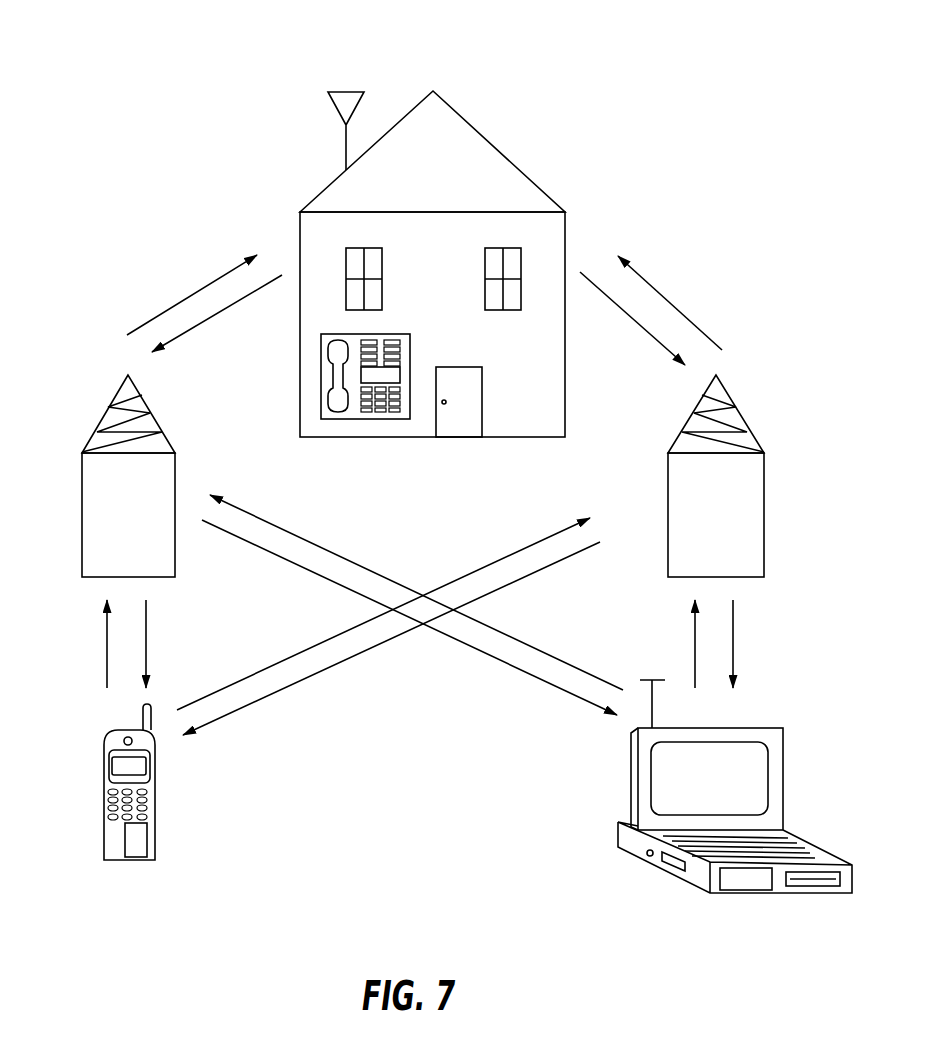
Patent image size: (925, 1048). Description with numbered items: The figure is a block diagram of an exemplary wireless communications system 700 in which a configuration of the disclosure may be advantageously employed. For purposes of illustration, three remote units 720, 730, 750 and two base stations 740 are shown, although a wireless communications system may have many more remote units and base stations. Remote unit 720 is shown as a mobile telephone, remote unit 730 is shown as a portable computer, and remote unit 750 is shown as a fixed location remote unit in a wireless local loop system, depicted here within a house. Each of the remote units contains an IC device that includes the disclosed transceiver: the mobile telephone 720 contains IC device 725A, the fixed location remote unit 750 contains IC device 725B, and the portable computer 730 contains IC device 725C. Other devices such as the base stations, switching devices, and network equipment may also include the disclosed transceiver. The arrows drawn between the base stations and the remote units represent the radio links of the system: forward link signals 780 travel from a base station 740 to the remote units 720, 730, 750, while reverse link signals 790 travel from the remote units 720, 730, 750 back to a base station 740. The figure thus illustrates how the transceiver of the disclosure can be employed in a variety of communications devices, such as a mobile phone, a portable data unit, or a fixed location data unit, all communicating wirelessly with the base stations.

The communication system 700 is at (152, 70).
The remote unit 720 is at (99, 809).
The IC device 725A is at (136, 848).
The IC device 725B is at (398, 375).
The IC device 725C is at (748, 880).
The remote unit 730 is at (735, 805).
The base station 740 is at (110, 418).
The remote unit 750 is at (364, 374).
The forward link signals 780 is at (196, 290).
The reverse link signals 790 is at (220, 320).